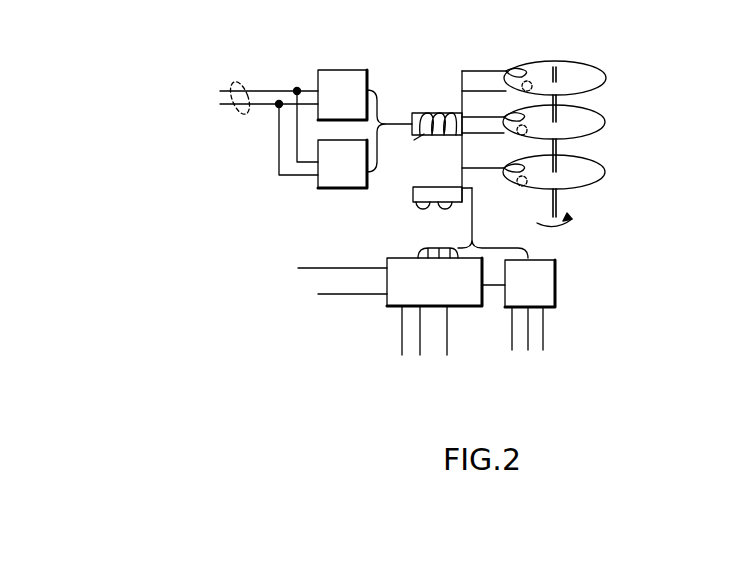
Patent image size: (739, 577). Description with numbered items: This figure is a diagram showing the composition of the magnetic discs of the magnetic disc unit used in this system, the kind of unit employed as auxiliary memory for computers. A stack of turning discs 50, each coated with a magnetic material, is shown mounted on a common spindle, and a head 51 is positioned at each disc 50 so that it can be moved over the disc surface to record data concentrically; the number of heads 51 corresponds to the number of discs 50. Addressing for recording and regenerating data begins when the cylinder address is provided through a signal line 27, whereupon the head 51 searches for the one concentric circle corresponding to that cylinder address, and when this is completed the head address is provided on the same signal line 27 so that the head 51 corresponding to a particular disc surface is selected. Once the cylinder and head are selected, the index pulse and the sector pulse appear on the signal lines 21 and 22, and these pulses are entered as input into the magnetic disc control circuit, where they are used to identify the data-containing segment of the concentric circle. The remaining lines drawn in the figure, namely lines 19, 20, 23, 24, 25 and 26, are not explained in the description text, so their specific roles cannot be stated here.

The input line 19 is at (331, 268).
The input line 20 is at (348, 296).
The signal line 21 is at (513, 338).
The signal line 22 is at (527, 340).
The output line 23 is at (400, 343).
The output line 24 is at (543, 342).
The output line 25 is at (420, 347).
The output line 26 is at (447, 347).
The signal line 27 is at (246, 82).
The disc 50 is at (590, 77).
The head 51 is at (526, 73).